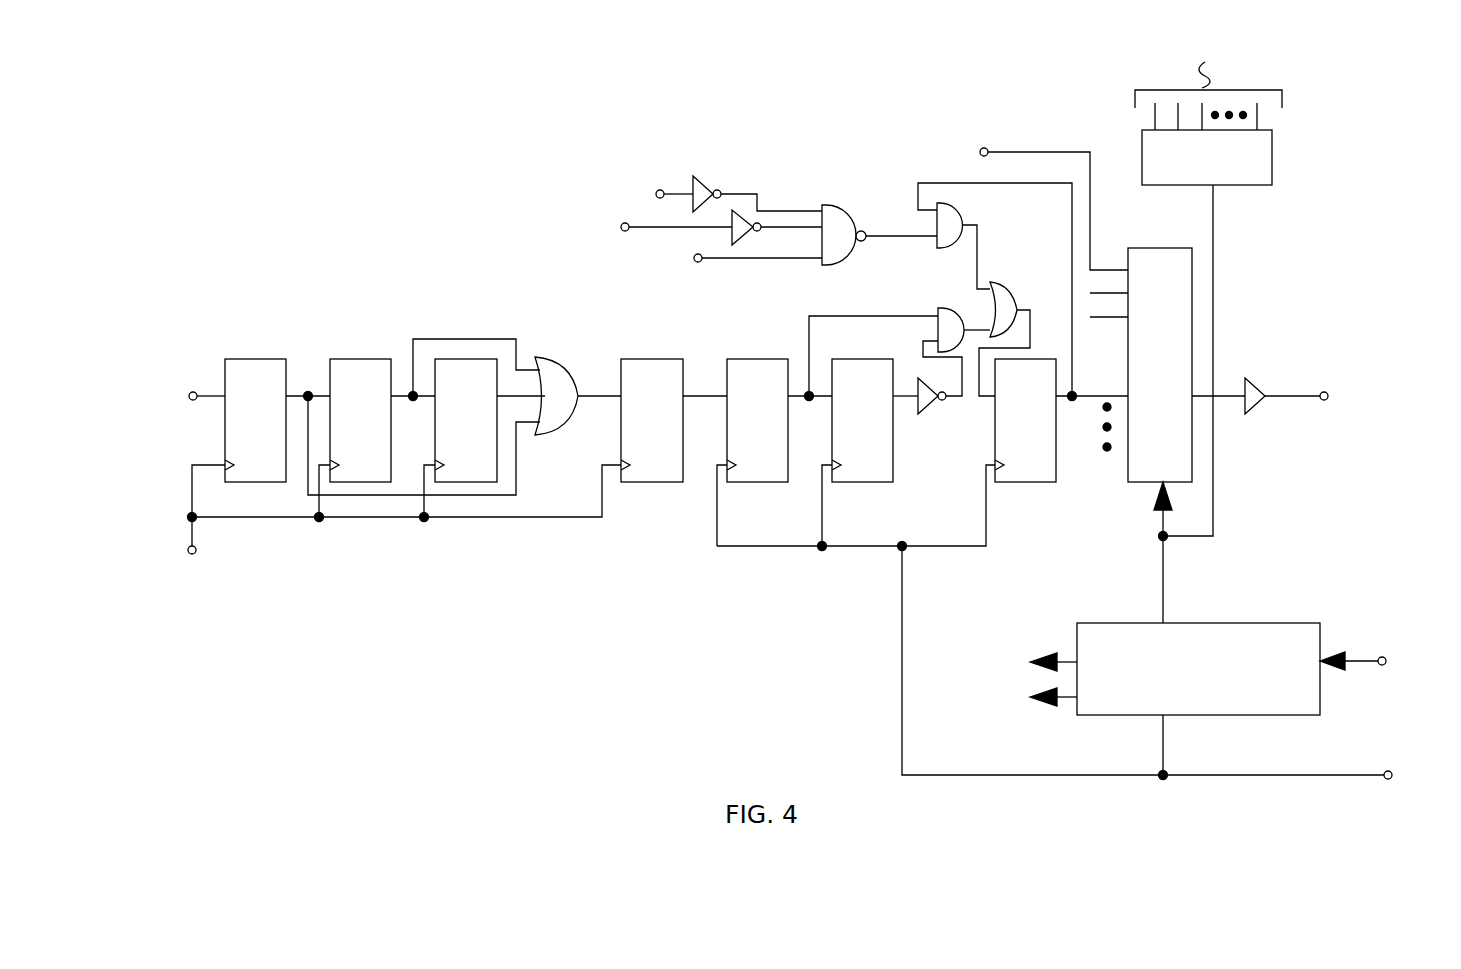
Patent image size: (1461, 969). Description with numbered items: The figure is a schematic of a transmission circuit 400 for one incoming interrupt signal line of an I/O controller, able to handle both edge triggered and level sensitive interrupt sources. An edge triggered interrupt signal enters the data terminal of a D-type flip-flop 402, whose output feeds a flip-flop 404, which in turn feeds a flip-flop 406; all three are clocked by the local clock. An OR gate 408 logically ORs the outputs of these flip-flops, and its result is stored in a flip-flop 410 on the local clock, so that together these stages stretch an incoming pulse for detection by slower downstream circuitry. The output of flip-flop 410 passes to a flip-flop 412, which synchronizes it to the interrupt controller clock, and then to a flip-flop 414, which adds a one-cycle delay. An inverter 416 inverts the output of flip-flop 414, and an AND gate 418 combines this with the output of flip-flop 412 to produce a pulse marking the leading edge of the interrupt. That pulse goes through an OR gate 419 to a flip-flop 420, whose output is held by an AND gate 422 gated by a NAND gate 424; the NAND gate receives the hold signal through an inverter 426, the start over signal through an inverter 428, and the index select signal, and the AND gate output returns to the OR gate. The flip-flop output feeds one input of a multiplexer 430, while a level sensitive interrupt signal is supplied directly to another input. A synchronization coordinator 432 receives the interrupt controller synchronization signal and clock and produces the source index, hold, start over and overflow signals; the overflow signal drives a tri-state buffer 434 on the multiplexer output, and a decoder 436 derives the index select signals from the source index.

The transmission circuit 400 is at (306, 240).
The D-type flip-flop 402 is at (252, 358).
The D-type flip-flop 404 is at (357, 358).
The D-type flip-flop 406 is at (458, 358).
The OR gate 408 is at (545, 358).
The D-type flip-flop 410 is at (647, 358).
The D-type flip-flop 412 is at (752, 358).
The D-type flip-flop 414 is at (862, 356).
The inverter 416 is at (936, 410).
The AND gate 418 is at (948, 308).
The OR gate 419 is at (1000, 284).
The D-type flip-flop 420 is at (1026, 484).
The AND gate 422 is at (955, 214).
The NAND gate 424 is at (828, 204).
The inverter 426 is at (703, 180).
The inverter 428 is at (746, 236).
The multiplexer 430 is at (1157, 249).
The synchronization coordinator 432 is at (1094, 623).
The tri-state buffer 434 is at (1259, 379).
The decoder 436 is at (1258, 186).